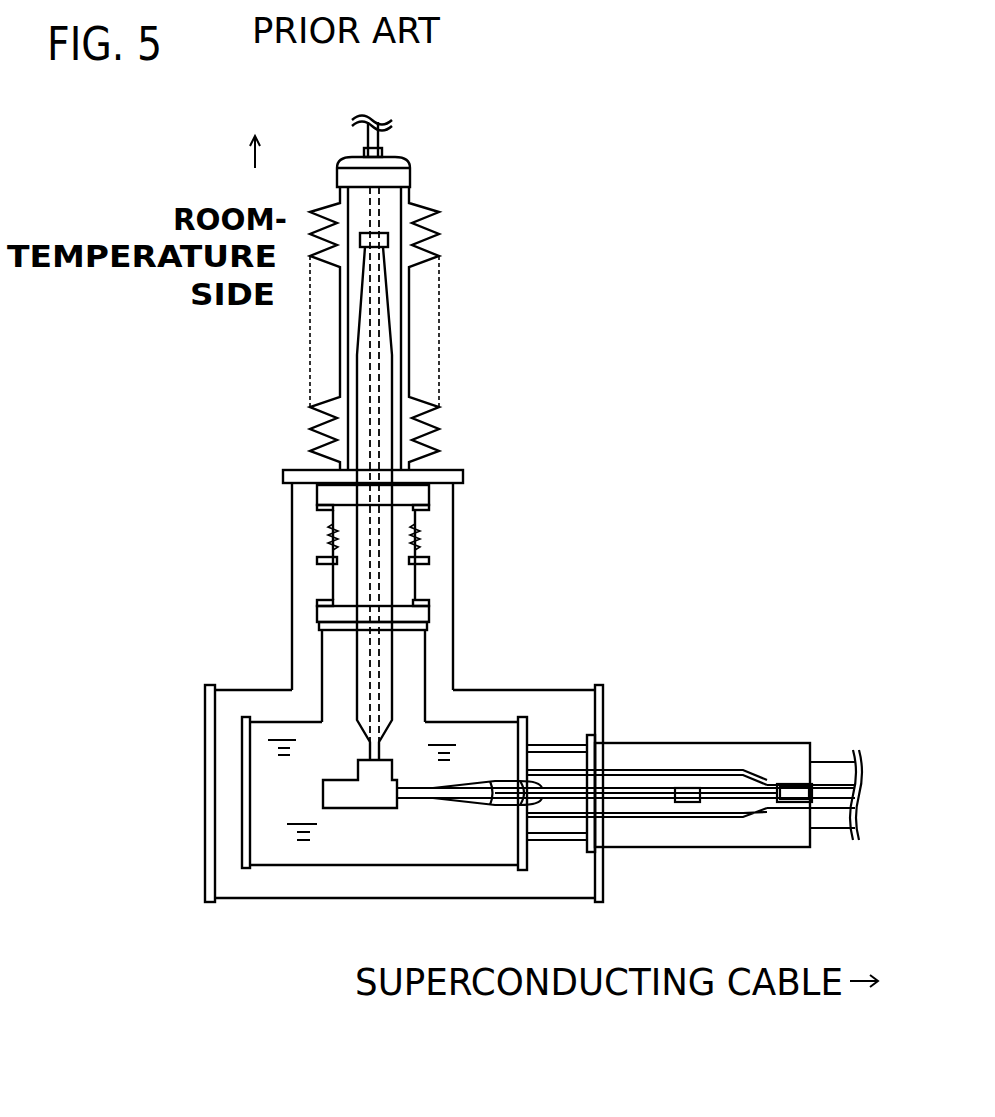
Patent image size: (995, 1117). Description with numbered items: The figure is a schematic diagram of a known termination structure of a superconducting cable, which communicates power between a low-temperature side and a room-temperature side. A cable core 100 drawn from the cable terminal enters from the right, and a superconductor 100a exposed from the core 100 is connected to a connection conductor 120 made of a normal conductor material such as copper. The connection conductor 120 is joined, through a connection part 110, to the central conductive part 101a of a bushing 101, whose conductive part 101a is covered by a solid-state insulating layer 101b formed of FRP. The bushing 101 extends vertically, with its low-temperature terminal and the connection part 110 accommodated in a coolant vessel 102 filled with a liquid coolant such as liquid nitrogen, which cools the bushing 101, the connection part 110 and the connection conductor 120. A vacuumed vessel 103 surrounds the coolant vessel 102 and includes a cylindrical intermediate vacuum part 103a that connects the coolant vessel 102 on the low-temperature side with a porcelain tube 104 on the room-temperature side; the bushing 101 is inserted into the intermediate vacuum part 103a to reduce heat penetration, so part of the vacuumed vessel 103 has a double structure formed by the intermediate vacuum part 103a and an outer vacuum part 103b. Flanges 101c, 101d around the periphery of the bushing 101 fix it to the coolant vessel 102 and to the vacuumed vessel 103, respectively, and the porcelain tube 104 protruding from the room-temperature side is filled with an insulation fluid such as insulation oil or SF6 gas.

The cable core 100 is at (812, 797).
The superconductor 100a is at (735, 797).
The bushing 101 is at (256, 473).
The central conductive part 101a is at (372, 672).
The solid-state insulating layer 101b is at (352, 690).
The flange 101c is at (430, 615).
The flange 101d is at (317, 488).
The coolant vessel 102 is at (448, 868).
The vacuumed vessel 103 is at (480, 690).
The intermediate vacuum part 103a is at (405, 585).
The outer vacuum part 103b is at (583, 723).
The porcelain tube 104 is at (435, 394).
The connection part 110 is at (355, 800).
The connection conductor 120 is at (600, 793).